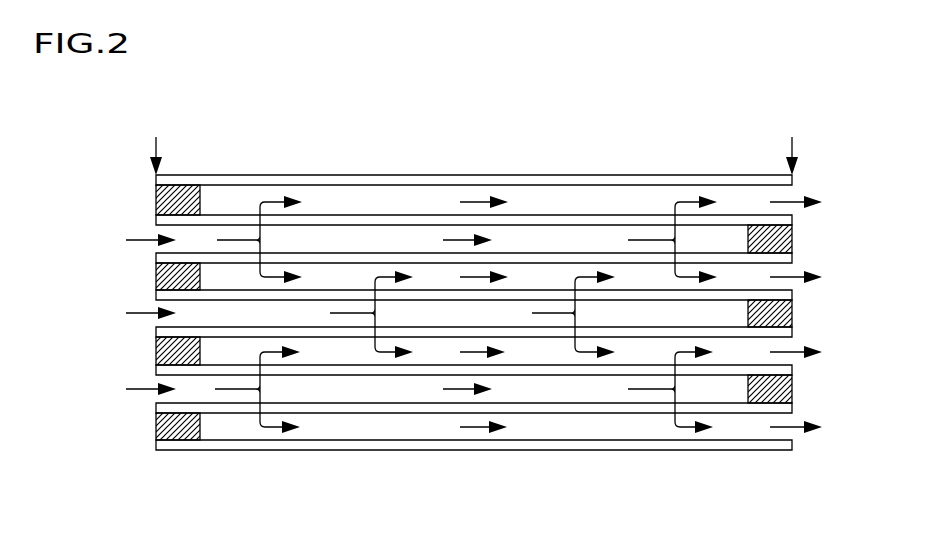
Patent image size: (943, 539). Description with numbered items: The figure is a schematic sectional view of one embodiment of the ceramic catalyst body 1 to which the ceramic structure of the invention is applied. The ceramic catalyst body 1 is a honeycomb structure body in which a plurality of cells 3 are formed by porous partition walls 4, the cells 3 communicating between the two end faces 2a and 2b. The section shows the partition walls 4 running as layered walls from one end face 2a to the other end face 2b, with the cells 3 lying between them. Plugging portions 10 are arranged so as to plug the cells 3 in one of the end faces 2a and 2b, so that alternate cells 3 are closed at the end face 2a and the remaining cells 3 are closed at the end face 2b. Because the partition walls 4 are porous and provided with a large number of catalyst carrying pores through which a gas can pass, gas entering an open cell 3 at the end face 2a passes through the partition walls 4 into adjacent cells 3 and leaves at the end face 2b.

The ceramic catalyst body 1 is at (373, 167).
The end face 2a is at (158, 142).
The end face 2b is at (790, 144).
The cell 3 is at (548, 238).
The partition wall 4 is at (387, 370).
The plugging portion 10 is at (156, 355).